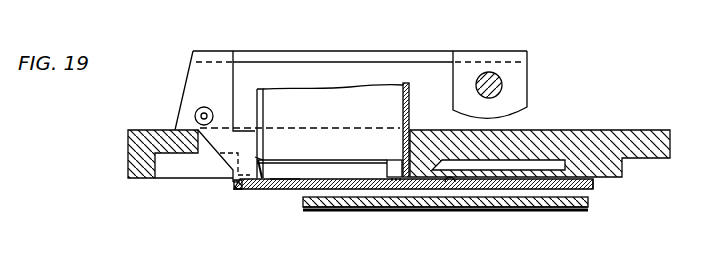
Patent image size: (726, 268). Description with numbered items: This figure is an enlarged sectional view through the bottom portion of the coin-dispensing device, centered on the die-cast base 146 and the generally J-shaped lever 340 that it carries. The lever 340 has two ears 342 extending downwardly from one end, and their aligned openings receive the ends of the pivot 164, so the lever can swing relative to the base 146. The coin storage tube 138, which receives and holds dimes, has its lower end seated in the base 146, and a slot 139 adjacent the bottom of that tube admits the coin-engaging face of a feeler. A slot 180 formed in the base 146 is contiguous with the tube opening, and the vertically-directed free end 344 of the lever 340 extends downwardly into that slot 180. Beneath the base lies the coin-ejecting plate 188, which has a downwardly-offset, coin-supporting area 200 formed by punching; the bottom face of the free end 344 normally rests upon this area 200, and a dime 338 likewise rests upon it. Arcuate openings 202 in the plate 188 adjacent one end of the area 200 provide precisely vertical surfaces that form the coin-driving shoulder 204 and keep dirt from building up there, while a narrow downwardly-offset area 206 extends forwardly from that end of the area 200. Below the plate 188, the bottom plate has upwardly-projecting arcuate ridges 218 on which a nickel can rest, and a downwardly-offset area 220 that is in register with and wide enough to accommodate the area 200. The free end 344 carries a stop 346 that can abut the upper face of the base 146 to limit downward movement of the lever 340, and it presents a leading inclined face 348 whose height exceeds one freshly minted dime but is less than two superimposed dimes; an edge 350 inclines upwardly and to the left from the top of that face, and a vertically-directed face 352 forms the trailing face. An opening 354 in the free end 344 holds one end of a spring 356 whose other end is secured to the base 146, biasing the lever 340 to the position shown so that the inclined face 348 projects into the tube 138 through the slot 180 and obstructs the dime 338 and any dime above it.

The coin storage tube 138 is at (374, 90).
The slot 139 is at (268, 107).
The base 146 is at (645, 130).
The pivot 164 is at (504, 87).
The slot 180 is at (205, 143).
The coin-ejecting plate 188 is at (558, 187).
The coin-supporting area 200 is at (280, 191).
The arcuate openings 202 is at (389, 192).
The coin-driving shoulder 204 is at (392, 160).
The narrow downwardly-offset area 206 is at (450, 187).
The arcuate ridges 218 is at (488, 208).
The downwardly-offset area 220 is at (415, 208).
The dime 338 is at (262, 160).
The J-shaped lever 340 is at (262, 51).
The ears 342 is at (527, 100).
The free end 344 is at (199, 86).
The stop 346 is at (183, 129).
The inclined face 348 is at (236, 190).
The edge 350 is at (265, 157).
The vertically-directed face 352 is at (233, 181).
The opening 354 is at (207, 107).
The spring 356 is at (214, 113).